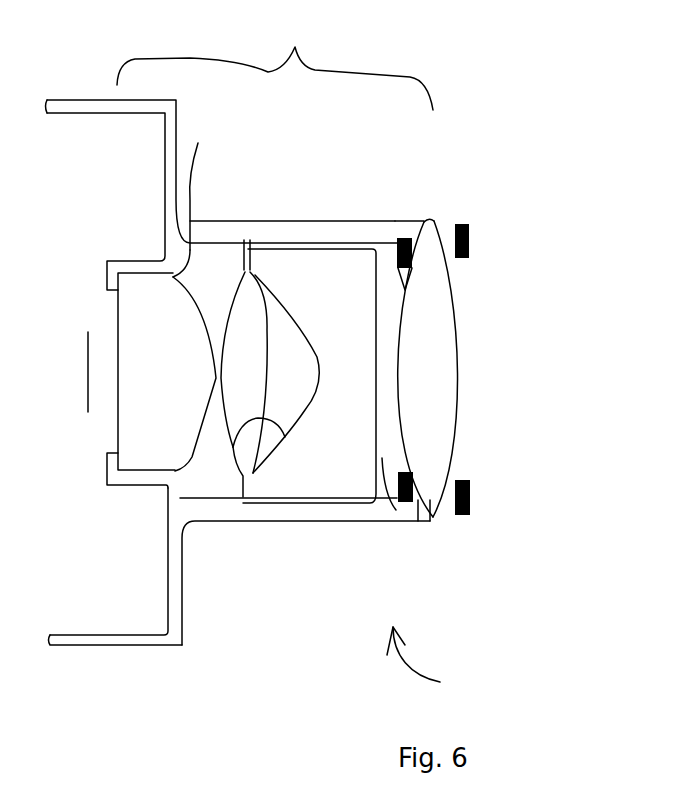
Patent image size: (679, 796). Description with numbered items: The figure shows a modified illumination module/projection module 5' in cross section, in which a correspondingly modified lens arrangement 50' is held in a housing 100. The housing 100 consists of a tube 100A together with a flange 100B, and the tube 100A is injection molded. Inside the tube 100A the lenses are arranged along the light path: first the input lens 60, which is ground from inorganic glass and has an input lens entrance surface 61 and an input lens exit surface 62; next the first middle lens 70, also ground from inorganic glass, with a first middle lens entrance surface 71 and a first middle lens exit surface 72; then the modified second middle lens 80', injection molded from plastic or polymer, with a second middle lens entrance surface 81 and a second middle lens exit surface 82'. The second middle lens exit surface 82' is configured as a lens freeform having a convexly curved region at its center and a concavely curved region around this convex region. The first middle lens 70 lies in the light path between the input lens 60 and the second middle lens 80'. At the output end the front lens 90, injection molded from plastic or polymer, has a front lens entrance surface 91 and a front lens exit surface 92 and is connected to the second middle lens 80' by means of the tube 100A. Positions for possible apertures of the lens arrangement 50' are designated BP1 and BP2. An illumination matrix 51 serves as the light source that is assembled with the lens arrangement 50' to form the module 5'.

The lens arrangement 50' is at (275, 57).
The illumination matrix 51 is at (88, 362).
The illumination module/projection module 5' is at (432, 665).
The input lens 60 is at (147, 276).
The input lens entrance surface 61 is at (118, 315).
The input lens exit surface 62 is at (292, 181).
The first middle lens 70 is at (252, 237).
The first middle lens entrance surface 71 is at (175, 489).
The first middle lens exit surface 72 is at (268, 320).
The second middle lens 80' is at (286, 504).
The second middle lens entrance surface 81 is at (233, 447).
The second middle lens exit surface 82' is at (398, 524).
The front lens 90 is at (427, 520).
The front lens entrance surface 91 is at (398, 233).
The front lens exit surface 92 is at (458, 355).
The housing 100 is at (202, 221).
The tube 100A is at (205, 510).
The flange 100B is at (88, 636).
The aperture position BP1 is at (468, 237).
The aperture position BP2 is at (413, 500).